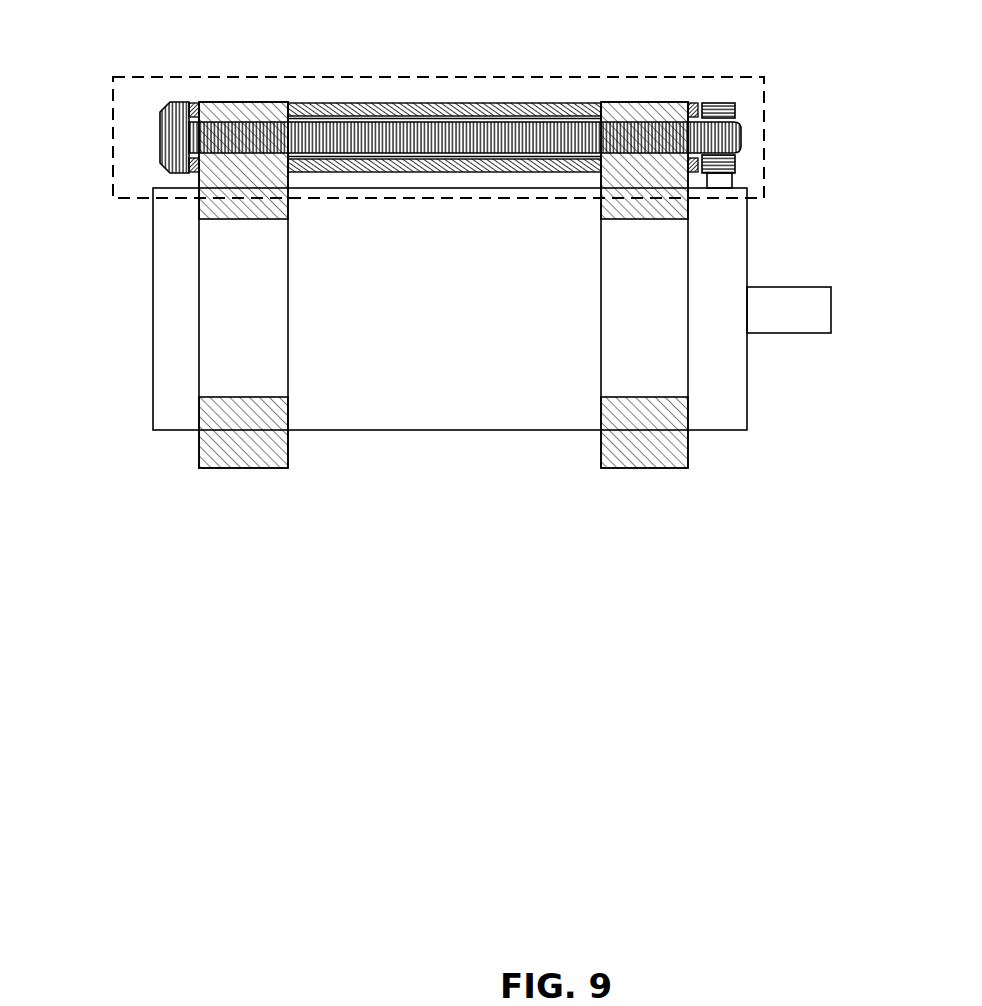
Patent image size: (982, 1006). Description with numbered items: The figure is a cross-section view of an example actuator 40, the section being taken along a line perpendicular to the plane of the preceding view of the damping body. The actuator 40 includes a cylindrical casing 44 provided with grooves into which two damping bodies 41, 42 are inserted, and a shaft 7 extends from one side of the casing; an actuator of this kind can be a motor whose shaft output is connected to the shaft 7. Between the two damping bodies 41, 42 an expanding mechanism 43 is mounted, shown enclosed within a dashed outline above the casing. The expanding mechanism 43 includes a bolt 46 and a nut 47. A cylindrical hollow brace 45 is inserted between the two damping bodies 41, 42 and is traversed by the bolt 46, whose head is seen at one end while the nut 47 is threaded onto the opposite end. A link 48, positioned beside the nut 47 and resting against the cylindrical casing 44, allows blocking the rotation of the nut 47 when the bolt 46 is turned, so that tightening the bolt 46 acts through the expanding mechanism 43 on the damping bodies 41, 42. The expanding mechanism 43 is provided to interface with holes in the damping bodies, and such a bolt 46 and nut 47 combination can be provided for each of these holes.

The shaft 7 is at (810, 317).
The actuator 40 is at (126, 330).
The damping body 41 is at (638, 450).
The damping body 42 is at (242, 448).
The expanding mechanism 43 is at (765, 125).
The cylindrical casing 44 is at (448, 397).
The cylindrical hollow brace 45 is at (405, 102).
The bolt 46 is at (158, 133).
The nut 47 is at (715, 110).
The link 48 is at (718, 182).